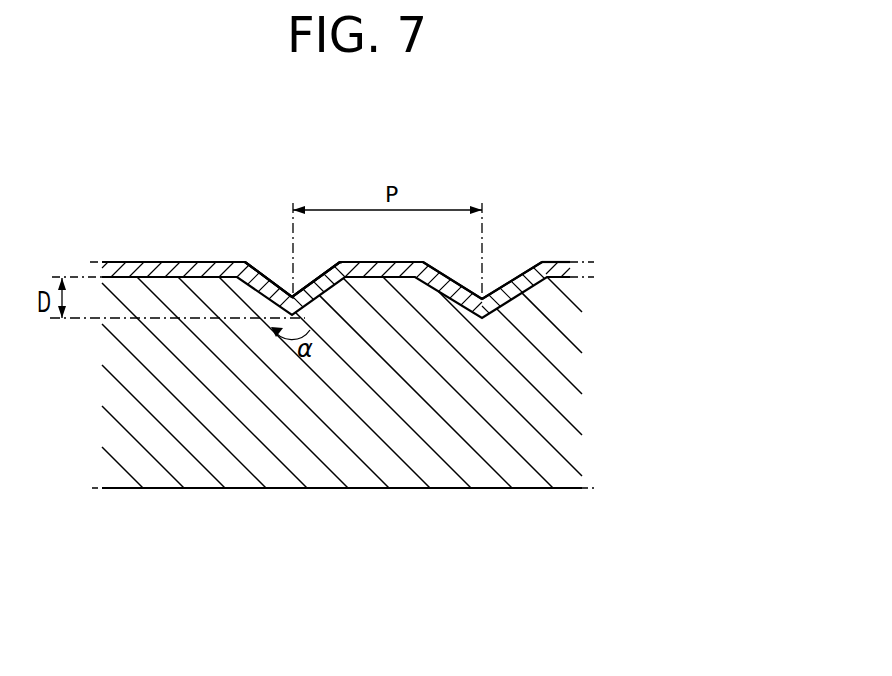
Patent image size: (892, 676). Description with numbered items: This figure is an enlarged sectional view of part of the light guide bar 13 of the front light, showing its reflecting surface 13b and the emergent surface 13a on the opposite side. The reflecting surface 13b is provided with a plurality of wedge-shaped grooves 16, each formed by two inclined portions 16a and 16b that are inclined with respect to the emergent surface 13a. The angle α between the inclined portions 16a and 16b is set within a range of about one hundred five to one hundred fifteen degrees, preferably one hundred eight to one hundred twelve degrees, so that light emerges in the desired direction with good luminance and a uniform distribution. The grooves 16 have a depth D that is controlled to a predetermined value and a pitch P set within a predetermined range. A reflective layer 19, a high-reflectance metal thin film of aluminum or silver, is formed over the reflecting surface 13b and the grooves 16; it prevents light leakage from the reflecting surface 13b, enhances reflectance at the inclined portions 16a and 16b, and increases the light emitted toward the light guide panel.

The light guide bar 13 is at (428, 413).
The emergent surface 13a is at (203, 489).
The reflecting surface 13b is at (163, 270).
The wedge-shaped groove 16 is at (275, 168).
The inclined portion 16a is at (262, 274).
The inclined portion 16b is at (323, 275).
The reflective layer 19 is at (564, 262).